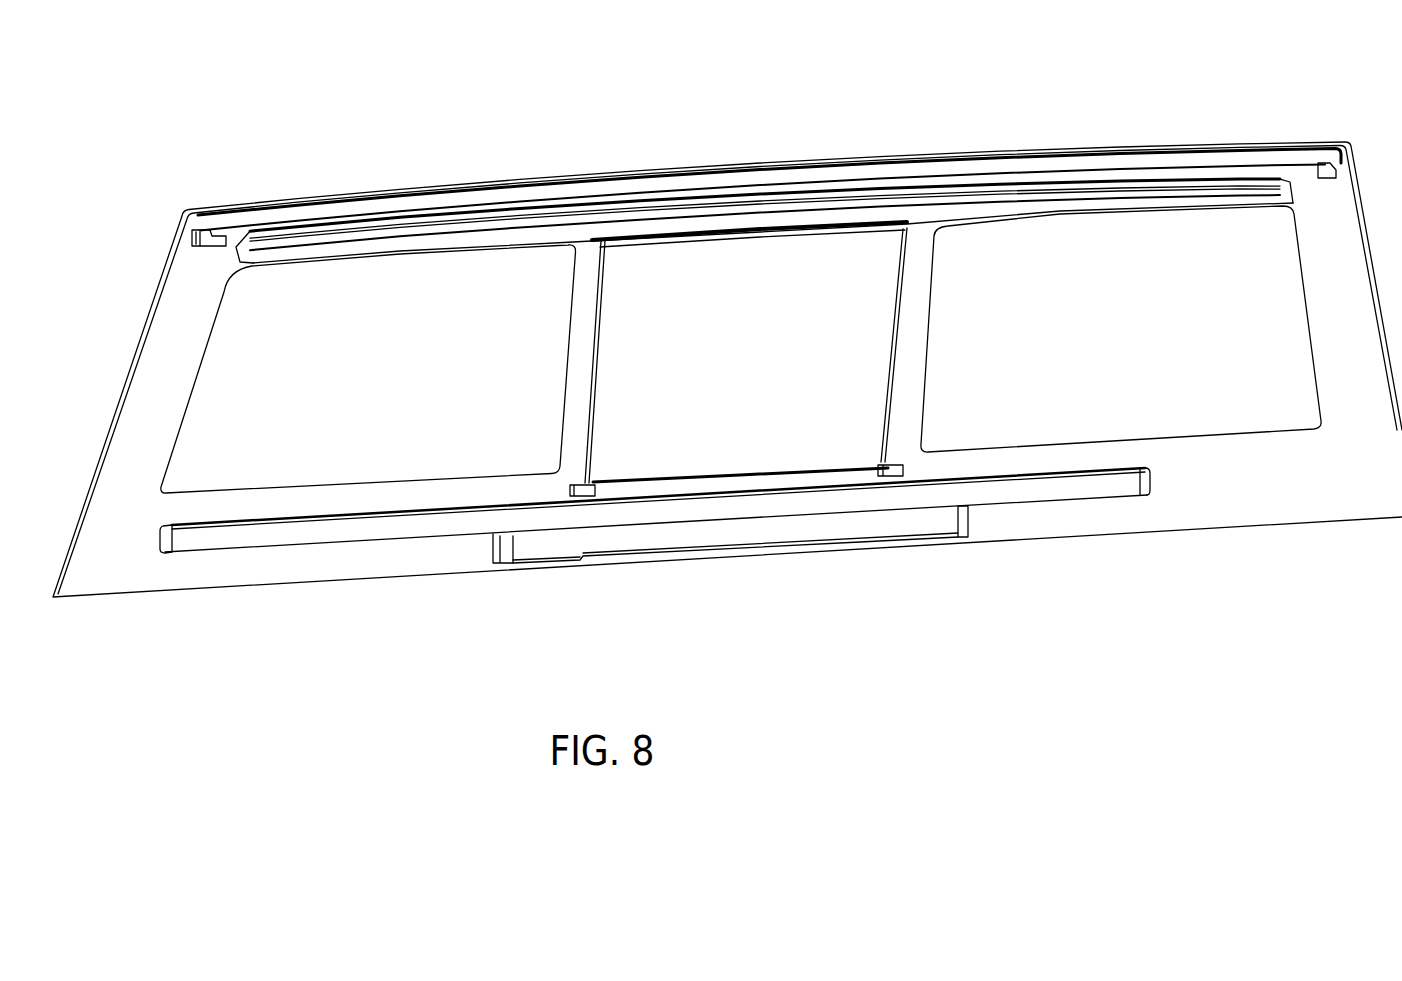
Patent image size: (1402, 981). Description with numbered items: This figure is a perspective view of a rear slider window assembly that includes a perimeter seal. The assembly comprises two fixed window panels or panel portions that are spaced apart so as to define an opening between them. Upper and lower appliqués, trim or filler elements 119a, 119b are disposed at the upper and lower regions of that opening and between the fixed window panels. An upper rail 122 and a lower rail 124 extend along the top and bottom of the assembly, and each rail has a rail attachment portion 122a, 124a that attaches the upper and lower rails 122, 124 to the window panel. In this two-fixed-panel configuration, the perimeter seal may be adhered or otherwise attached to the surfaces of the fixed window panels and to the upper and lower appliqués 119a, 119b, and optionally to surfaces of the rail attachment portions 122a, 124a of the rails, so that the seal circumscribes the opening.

The upper appliqué 119a is at (718, 170).
The lower appliqué 119b is at (700, 555).
The upper rail 122 is at (890, 193).
The rail attachment portion of upper rail 122a is at (838, 241).
The lower rail 124 is at (422, 523).
The rail attachment portion of lower rail 124a is at (735, 465).